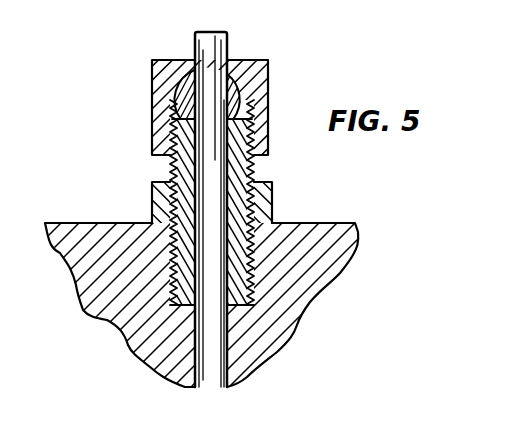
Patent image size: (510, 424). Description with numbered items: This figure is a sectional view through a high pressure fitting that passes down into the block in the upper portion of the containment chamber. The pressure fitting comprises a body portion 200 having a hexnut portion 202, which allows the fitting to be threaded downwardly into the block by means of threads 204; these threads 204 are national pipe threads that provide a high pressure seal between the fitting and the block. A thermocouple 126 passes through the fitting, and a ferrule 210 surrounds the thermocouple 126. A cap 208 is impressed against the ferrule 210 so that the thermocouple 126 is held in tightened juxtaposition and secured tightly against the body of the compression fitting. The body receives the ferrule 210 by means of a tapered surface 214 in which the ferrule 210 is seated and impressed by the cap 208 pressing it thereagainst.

The thermocouple 126 is at (220, 44).
The body portion 200 is at (273, 167).
The hexnut portion 202 is at (152, 197).
The threads 204 is at (253, 272).
The cap 208 is at (268, 103).
The ferrule 210 is at (232, 92).
The tapered surface 214 is at (232, 122).